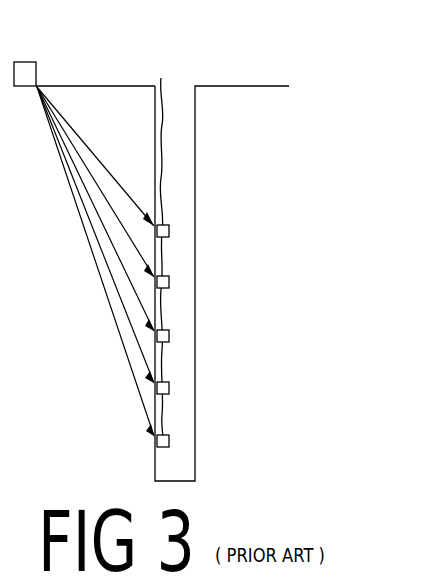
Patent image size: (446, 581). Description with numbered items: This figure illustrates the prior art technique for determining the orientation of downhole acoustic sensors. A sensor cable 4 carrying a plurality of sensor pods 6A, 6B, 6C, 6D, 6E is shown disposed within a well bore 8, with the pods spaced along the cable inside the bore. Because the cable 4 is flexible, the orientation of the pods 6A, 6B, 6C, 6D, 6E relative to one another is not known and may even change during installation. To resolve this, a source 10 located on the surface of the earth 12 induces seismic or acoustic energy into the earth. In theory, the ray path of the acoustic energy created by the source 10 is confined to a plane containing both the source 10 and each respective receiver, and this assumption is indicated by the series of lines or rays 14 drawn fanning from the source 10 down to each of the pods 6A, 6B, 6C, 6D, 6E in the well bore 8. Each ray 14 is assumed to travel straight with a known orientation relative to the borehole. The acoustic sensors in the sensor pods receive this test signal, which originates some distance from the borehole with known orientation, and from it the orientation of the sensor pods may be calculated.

The sensor cable 4 is at (162, 82).
The sensor pod 6A is at (170, 233).
The sensor pod 6B is at (170, 284).
The sensor pod 6C is at (170, 338).
The sensor pod 6D is at (170, 390).
The sensor pod 6E is at (170, 442).
The well bore 8 is at (185, 128).
The source 10 is at (24, 62).
The surface of the earth 12 is at (90, 86).
The rays 14 is at (92, 293).